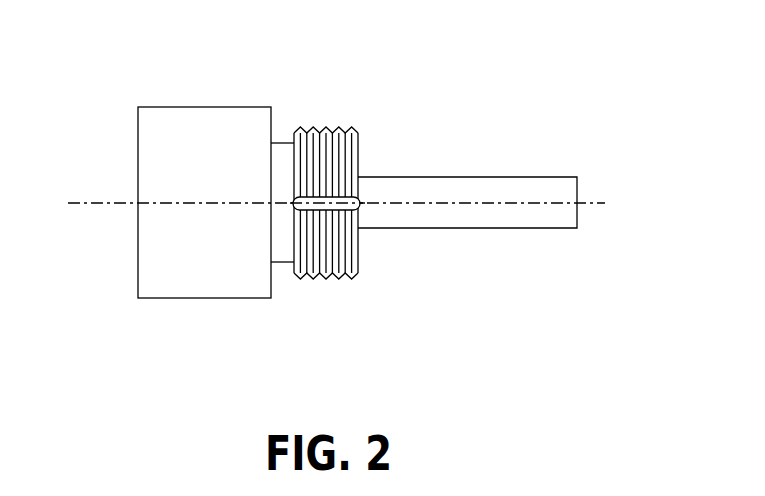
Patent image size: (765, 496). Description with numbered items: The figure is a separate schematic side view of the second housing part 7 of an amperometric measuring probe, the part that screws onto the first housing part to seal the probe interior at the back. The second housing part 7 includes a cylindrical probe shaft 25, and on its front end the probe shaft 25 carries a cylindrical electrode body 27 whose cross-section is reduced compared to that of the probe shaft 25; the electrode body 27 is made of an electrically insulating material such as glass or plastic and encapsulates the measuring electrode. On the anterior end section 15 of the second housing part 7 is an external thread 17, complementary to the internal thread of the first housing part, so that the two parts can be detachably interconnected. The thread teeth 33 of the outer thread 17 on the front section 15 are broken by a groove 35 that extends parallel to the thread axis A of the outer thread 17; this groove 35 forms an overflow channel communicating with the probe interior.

The second housing part 7 is at (336, 219).
The anterior end section 15 is at (363, 221).
The external thread 17 is at (323, 270).
The probe shaft 25 is at (209, 273).
The electrode body 27 is at (525, 218).
The thread teeth 33 is at (348, 129).
The groove 35 is at (358, 205).
The thread axis A is at (89, 205).